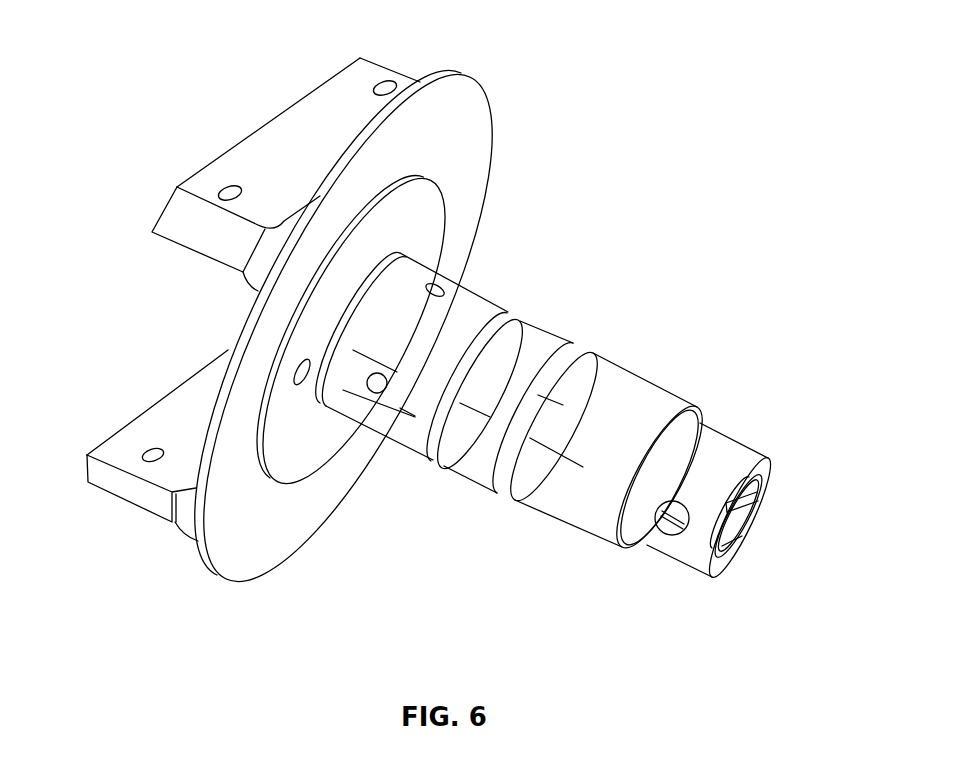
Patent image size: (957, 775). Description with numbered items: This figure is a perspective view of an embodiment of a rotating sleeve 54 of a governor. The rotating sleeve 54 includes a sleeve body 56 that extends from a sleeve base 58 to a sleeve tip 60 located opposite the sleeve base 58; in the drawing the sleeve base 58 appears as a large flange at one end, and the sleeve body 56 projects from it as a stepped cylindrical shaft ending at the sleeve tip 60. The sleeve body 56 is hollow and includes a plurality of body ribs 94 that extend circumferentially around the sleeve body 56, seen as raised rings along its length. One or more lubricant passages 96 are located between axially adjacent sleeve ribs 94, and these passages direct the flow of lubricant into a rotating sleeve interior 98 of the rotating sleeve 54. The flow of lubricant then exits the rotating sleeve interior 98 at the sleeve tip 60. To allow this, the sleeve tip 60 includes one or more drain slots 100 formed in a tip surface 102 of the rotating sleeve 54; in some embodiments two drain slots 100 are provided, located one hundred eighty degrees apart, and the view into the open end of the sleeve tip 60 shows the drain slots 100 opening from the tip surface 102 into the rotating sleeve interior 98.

The rotating sleeve 54 is at (210, 52).
The sleeve body 56 is at (633, 391).
The sleeve base 58 is at (474, 96).
The sleeve tip 60 is at (718, 575).
The body ribs 94 is at (604, 368).
The lubricant passages 96 is at (500, 490).
The rotating sleeve interior 98 is at (752, 503).
The drain slots 100 is at (770, 473).
The tip surface 102 is at (745, 547).